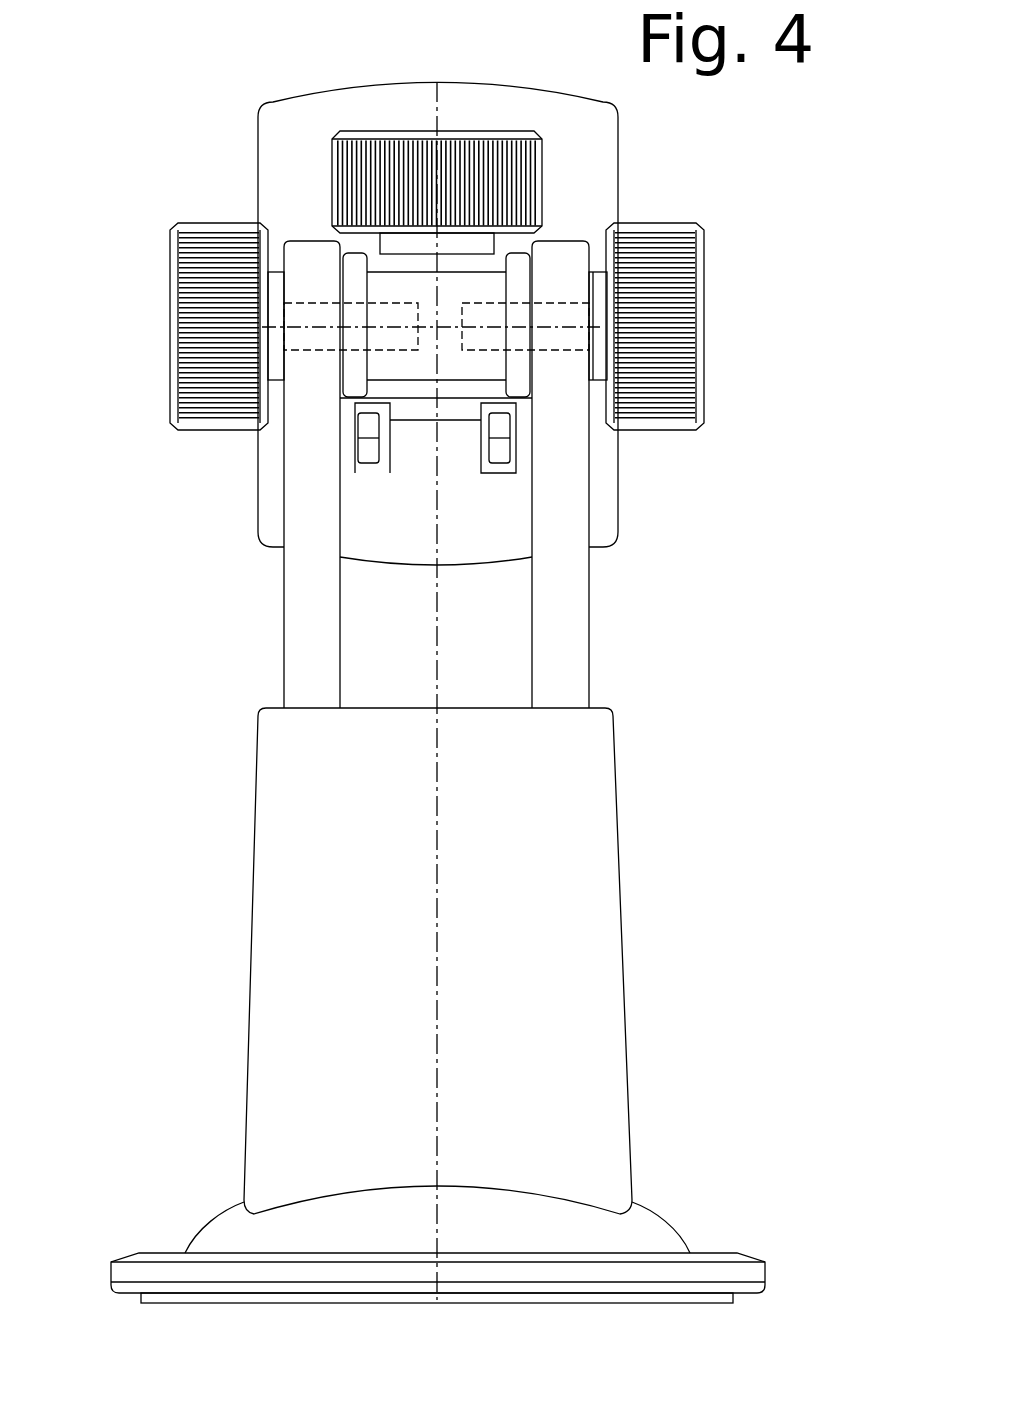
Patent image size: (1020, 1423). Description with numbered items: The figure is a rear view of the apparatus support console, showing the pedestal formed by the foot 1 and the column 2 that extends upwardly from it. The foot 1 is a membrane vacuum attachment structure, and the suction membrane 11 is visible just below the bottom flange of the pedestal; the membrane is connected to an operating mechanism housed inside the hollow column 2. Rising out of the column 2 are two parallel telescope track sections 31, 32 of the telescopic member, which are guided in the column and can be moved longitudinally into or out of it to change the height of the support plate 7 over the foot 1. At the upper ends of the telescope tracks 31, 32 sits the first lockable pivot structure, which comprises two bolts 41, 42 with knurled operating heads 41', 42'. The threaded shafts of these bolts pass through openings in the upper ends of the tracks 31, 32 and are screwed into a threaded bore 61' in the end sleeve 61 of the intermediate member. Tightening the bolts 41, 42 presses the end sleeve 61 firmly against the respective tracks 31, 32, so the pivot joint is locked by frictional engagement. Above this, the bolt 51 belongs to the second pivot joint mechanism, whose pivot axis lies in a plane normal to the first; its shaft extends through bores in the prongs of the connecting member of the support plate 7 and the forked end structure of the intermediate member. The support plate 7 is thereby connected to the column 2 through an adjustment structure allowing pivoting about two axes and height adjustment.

The foot 1 is at (640, 1230).
The suction membrane 11 is at (475, 1296).
The column 2 is at (597, 905).
The telescope track section 31 is at (308, 612).
The telescope track section 32 is at (567, 623).
The bolt 41 is at (169, 326).
The knurled operating head 41' is at (146, 290).
The bolt 42 is at (699, 326).
The knurled operating head 42' is at (727, 298).
The bolt 51 is at (485, 150).
The end sleeve 61 is at (524, 406).
The threaded bore 61' is at (366, 411).
The support plate 7 is at (270, 147).